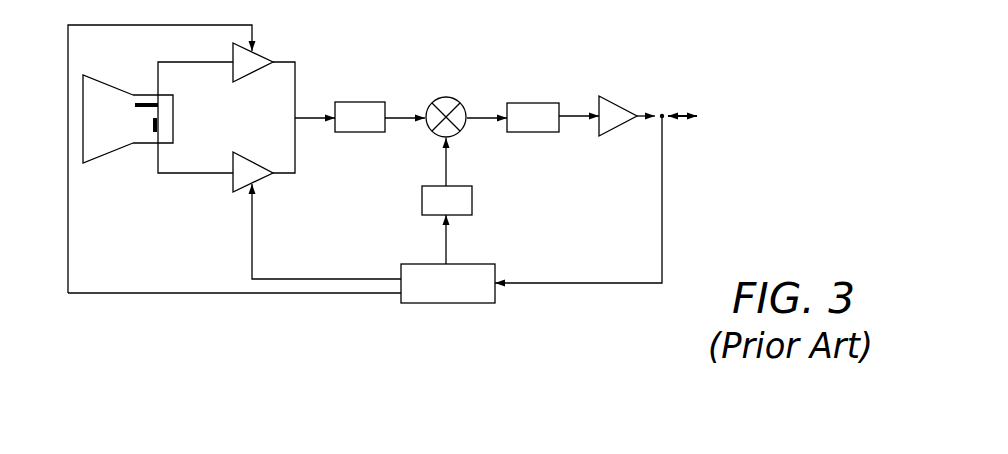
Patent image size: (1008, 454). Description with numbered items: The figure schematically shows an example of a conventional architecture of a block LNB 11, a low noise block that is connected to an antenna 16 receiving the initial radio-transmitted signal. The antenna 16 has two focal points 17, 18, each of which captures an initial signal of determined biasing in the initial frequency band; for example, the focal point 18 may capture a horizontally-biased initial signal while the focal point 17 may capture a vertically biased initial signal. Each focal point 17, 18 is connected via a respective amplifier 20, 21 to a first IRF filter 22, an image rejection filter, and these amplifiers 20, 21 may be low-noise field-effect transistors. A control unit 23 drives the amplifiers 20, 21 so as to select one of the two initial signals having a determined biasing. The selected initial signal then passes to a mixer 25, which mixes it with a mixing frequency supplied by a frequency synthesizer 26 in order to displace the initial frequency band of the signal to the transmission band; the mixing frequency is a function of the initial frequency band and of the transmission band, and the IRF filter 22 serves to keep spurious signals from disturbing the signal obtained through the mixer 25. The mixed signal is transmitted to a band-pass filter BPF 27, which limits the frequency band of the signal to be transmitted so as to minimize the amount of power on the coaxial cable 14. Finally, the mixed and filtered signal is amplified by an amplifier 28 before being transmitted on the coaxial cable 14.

The block LNB 11 is at (585, 335).
The coaxial cable 14 is at (679, 118).
The antenna 16 is at (100, 160).
The focal point 17 is at (148, 102).
The focal point 18 is at (152, 134).
The amplifier 20 is at (265, 50).
The amplifier 21 is at (262, 183).
The IRF filter 22 is at (358, 132).
The control unit 23 is at (447, 303).
The mixer 25 is at (462, 133).
The frequency synthesizer 26 is at (472, 198).
The band-pass filter BPF 27 is at (545, 132).
The amplifier 28 is at (620, 128).